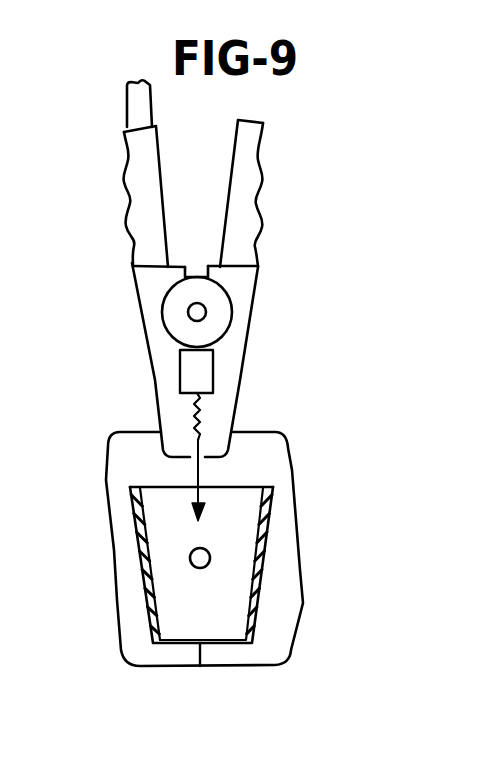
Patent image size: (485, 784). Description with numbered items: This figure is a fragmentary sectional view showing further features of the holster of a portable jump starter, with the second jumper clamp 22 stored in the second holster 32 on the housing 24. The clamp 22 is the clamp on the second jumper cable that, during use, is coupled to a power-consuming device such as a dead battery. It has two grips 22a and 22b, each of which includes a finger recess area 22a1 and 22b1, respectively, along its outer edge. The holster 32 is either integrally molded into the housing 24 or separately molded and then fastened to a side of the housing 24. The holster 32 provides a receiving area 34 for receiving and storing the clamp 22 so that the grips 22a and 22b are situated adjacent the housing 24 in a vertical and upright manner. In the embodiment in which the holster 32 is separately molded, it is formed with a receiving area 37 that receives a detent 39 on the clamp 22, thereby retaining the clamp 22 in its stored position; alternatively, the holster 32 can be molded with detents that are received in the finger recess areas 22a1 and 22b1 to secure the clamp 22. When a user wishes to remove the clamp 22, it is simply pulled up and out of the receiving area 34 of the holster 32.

The second jumper clamp 22 is at (147, 332).
The grip 22a is at (258, 161).
The finger recess area 22a1 is at (258, 240).
The grip 22b is at (131, 167).
The finger recess area 22b1 is at (134, 246).
The detent 39 is at (206, 314).
The housing 24 is at (120, 555).
The second holster 32 is at (247, 587).
The receiving area 34 is at (229, 492).
The receiving area 37 is at (210, 556).